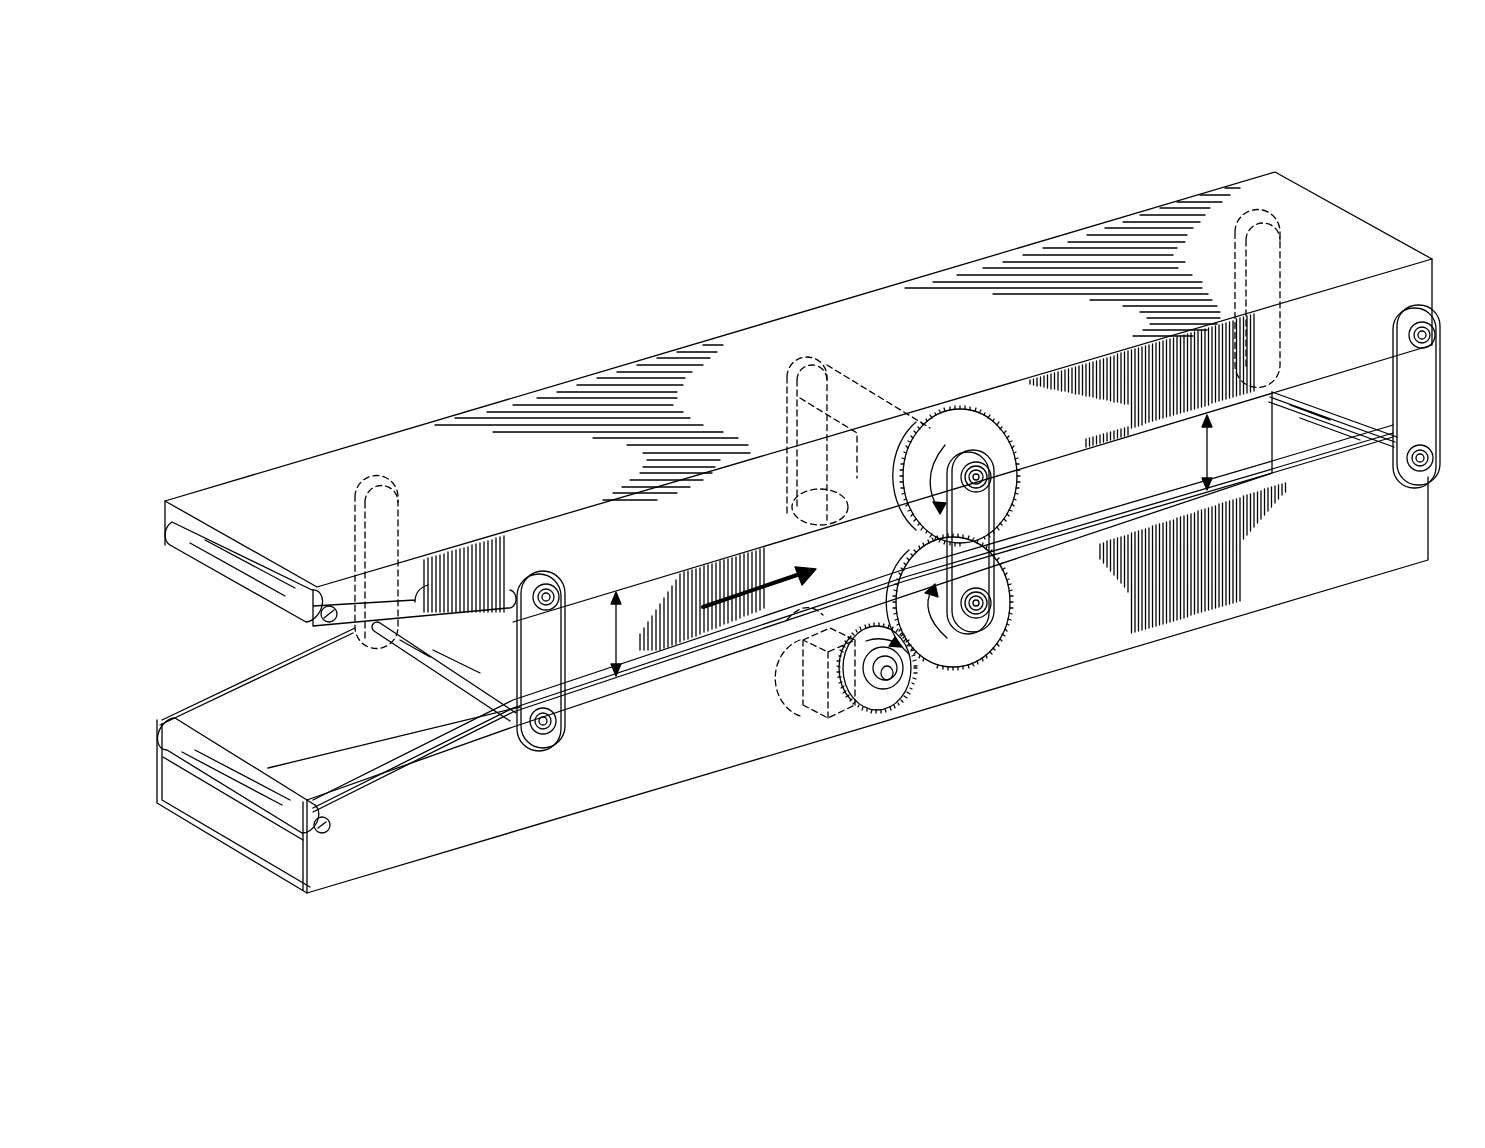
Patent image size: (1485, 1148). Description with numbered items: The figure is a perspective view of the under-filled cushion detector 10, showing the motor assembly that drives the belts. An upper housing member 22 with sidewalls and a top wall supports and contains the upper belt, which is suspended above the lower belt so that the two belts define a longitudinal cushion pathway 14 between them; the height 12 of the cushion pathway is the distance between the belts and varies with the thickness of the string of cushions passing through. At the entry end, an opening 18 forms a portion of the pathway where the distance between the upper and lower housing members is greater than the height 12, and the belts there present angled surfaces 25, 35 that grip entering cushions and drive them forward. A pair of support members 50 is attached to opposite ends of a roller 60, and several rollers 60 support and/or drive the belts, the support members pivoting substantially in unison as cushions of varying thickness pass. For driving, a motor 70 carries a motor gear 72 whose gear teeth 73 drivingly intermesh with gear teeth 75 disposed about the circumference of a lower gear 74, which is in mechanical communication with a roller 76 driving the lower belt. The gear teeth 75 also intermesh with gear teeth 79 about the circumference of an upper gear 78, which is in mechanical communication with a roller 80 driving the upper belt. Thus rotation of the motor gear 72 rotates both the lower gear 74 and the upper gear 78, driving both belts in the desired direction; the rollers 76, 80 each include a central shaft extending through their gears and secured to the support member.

The under-filled cushion detector 10 is at (1379, 188).
The height of the cushion pathway 12 is at (618, 637).
The cushion pathway 14 is at (744, 596).
The opening 18 is at (159, 545).
The upper housing member 22 is at (777, 318).
The angled surface 25 is at (418, 600).
The angled surface 35 is at (462, 790).
The support member 50 is at (572, 645).
The roller 60 is at (270, 598).
The motor 70 is at (782, 702).
The motor gear 72 is at (872, 700).
The gear teeth 73 is at (902, 697).
The lower gear 74 is at (999, 606).
The gear teeth 75 is at (1000, 590).
The roller 76 is at (800, 546).
The upper gear 78 is at (1002, 468).
The gear teeth 79 is at (998, 420).
The roller 80 is at (891, 402).